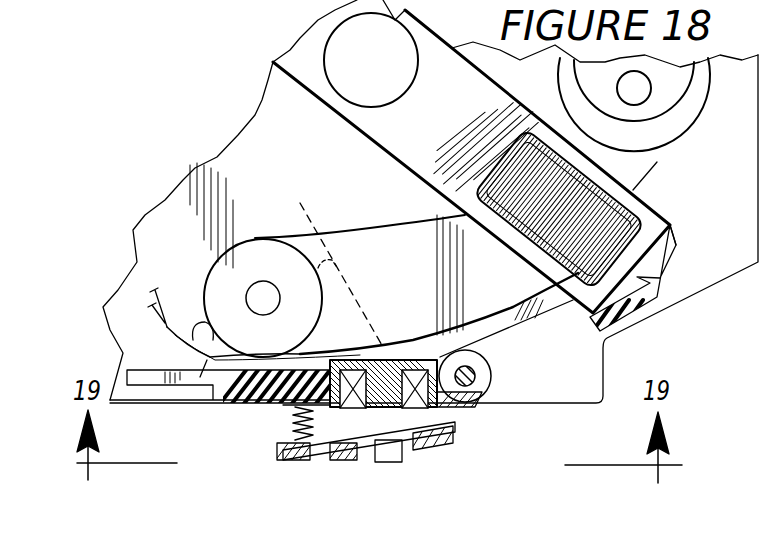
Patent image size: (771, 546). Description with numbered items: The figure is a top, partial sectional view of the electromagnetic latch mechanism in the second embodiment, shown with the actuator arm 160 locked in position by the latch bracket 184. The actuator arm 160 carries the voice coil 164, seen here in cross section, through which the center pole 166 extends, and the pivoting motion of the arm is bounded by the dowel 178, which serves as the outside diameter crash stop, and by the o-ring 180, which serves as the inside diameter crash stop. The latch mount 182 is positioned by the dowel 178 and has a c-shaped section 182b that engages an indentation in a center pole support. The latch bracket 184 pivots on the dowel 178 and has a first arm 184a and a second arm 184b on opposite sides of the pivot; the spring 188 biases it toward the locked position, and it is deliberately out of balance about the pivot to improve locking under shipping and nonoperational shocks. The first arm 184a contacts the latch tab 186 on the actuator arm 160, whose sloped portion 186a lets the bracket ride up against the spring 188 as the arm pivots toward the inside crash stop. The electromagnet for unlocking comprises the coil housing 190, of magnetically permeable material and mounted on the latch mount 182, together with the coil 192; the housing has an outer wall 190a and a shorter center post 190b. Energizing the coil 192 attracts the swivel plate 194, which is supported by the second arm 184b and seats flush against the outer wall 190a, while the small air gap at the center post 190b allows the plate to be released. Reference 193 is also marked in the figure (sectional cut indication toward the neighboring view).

The actuator arm 160 is at (400, 143).
The coil 164 is at (548, 157).
The center pole 166 is at (422, 238).
The dowel 178 is at (487, 390).
The o-ring 180 is at (680, 133).
The latch mount 182 is at (223, 392).
The c-shaped section 182b is at (325, 262).
The latch bracket 184 is at (537, 377).
The first arm 184a is at (660, 305).
The second arm 184b is at (307, 457).
The latch tab 186 is at (667, 257).
The sloped portion 186a is at (672, 228).
The spring 188 is at (290, 423).
The coil housing 190 is at (400, 362).
The outer wall 190a is at (352, 410).
The center post 190b is at (423, 433).
The coil 192 is at (355, 368).
The direction of movement 193 is at (423, 352).
The swivel plate 194 is at (390, 460).